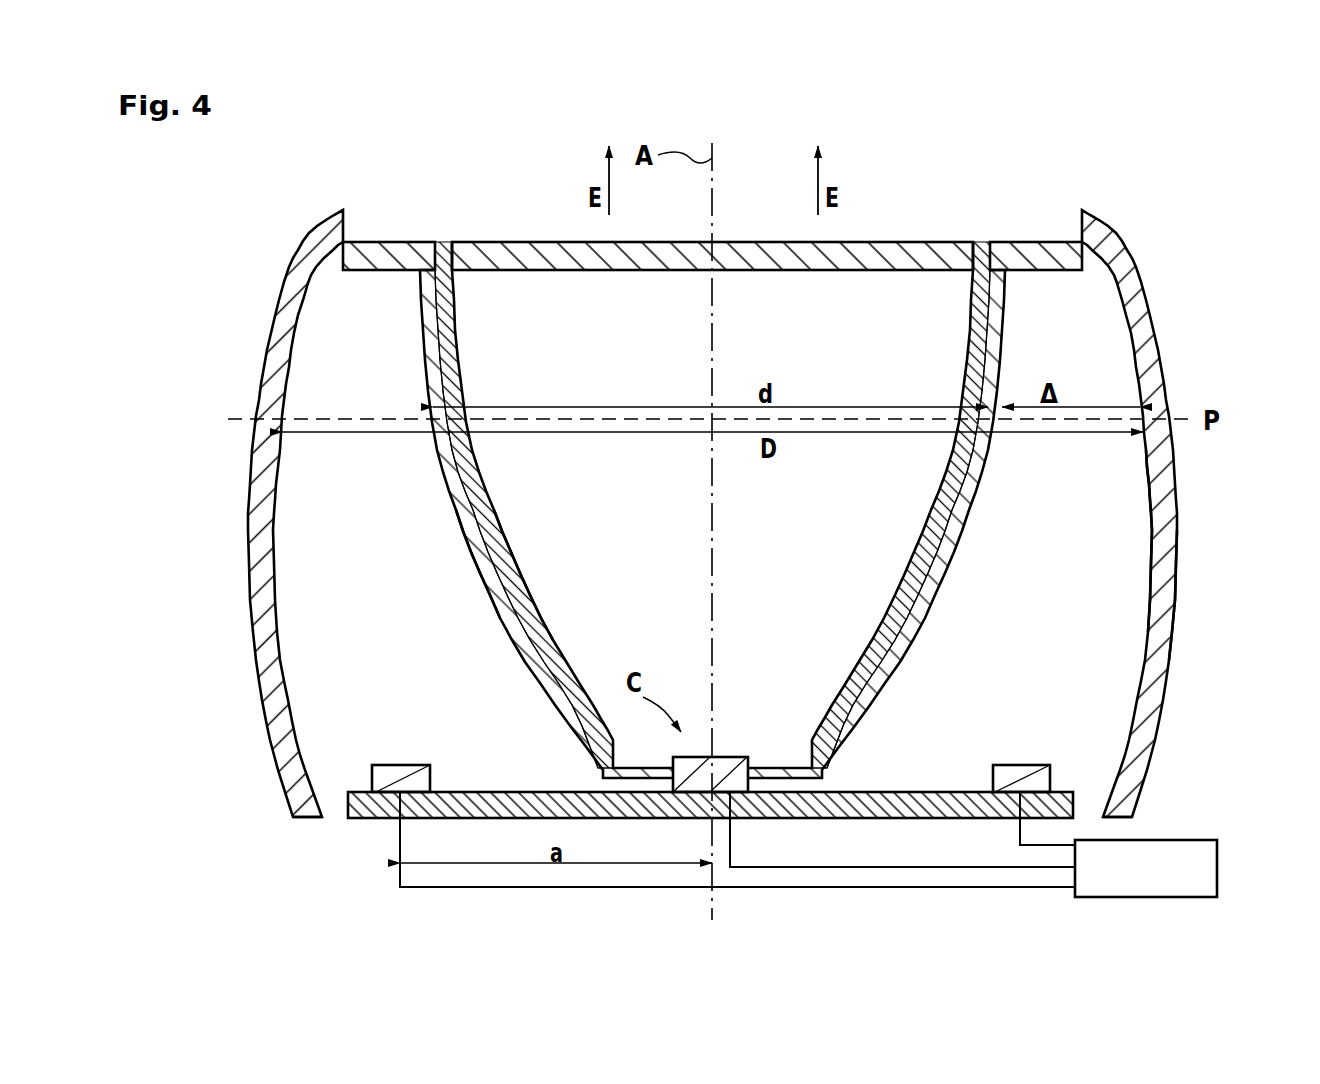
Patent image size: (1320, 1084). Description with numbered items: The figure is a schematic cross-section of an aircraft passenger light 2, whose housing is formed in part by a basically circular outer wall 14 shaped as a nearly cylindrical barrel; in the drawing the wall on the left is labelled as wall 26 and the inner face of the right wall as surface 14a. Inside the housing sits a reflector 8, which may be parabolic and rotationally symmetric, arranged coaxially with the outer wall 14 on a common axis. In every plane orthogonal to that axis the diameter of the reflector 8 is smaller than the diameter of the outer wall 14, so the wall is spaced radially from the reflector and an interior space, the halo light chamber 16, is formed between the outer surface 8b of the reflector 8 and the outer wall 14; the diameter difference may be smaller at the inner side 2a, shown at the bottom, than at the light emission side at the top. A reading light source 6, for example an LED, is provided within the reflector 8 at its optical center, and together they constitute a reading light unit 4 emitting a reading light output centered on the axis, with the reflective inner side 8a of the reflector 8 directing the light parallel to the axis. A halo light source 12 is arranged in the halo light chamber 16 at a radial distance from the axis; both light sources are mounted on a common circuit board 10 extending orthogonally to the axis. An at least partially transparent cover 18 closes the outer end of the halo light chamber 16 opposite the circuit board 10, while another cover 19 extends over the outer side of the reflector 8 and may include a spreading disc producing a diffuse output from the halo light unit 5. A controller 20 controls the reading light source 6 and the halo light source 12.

The aircraft passenger light 2 is at (1178, 212).
The inner side 2a is at (318, 836).
The reading light unit 4 is at (967, 210).
The halo light unit 5 is at (411, 210).
The reading light source 6 is at (729, 740).
The reflector 8 is at (505, 362).
The inner side of the reflector 8a is at (525, 542).
The outer surface of the reflector 8b is at (455, 578).
The circuit board 10 is at (925, 800).
The halo light source 12 is at (385, 772).
The outer wall 14 is at (1163, 354).
The inner surface of outer wall 14a is at (1108, 483).
The halo light chamber 16 is at (1118, 578).
The at least partially transparent cover 18 is at (1040, 252).
The at least partially transparent cover 19 is at (906, 242).
The controller 20 is at (1198, 868).
The housing wall 26 is at (318, 200).